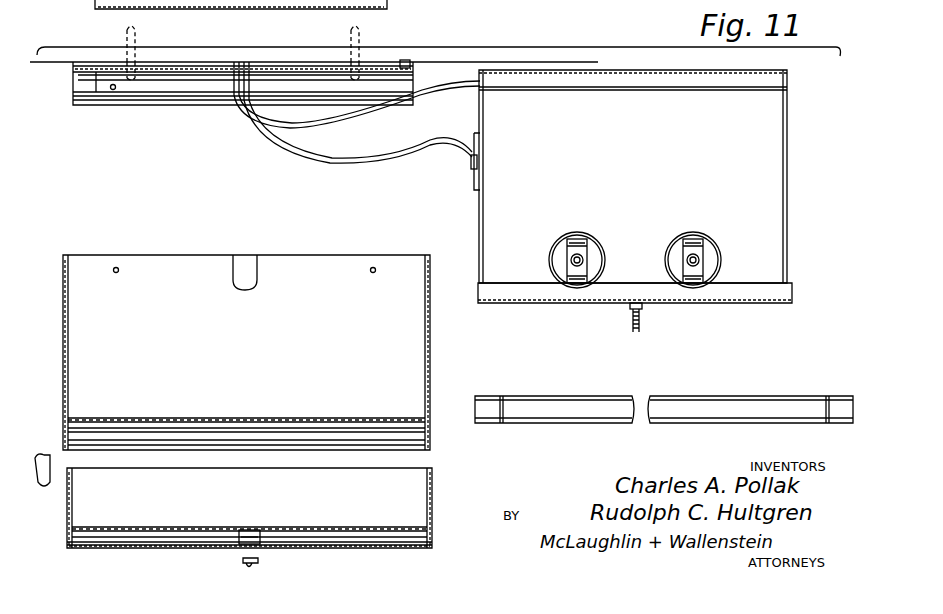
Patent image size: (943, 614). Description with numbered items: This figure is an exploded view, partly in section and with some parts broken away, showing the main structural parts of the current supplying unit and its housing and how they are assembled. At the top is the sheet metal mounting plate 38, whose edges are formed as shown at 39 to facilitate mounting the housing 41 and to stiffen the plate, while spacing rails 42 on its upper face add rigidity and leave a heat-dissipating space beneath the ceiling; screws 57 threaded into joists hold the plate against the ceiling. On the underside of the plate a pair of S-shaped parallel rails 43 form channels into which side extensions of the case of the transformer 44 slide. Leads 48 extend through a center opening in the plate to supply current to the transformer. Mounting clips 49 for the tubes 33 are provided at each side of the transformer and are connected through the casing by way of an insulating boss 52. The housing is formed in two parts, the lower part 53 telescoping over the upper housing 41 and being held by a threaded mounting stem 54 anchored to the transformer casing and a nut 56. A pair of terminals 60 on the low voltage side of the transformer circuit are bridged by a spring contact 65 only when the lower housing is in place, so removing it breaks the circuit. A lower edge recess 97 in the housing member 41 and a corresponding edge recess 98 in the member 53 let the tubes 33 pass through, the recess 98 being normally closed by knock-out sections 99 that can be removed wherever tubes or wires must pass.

The tubes 33 is at (620, 425).
The mounting plate 38 is at (206, 72).
The formed edges 39 is at (128, 100).
The housing 41 is at (430, 354).
The spacing rails 42 is at (406, 60).
The parallel rails 43 is at (80, 87).
The transformer 44 is at (770, 158).
The leads 48 is at (388, 148).
The mounting clips 49 is at (577, 240).
The insulating boss 52 is at (675, 246).
The lower part of housing 53 is at (426, 550).
The threaded mounting stem 54 is at (634, 333).
The nut 56 is at (260, 561).
The screws 57 is at (125, 32).
The terminals 60 is at (645, 310).
The spring contact 65 is at (245, 530).
The lower edge recess 97 is at (432, 442).
The edge recess 98 is at (433, 480).
The knock-out sections 99 is at (242, 262).